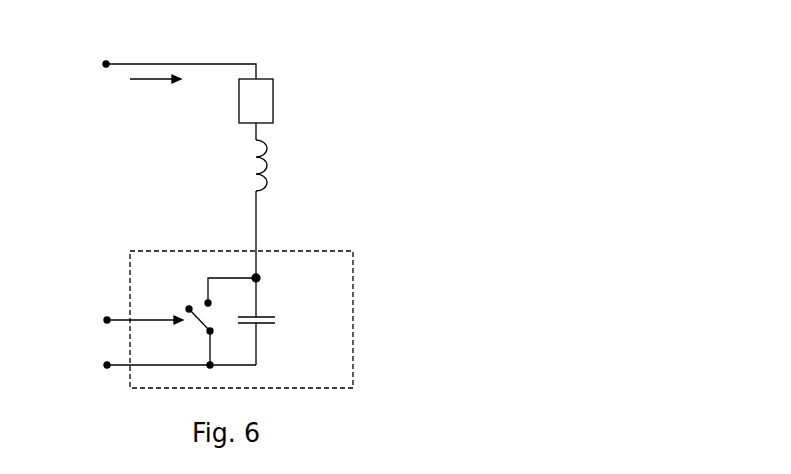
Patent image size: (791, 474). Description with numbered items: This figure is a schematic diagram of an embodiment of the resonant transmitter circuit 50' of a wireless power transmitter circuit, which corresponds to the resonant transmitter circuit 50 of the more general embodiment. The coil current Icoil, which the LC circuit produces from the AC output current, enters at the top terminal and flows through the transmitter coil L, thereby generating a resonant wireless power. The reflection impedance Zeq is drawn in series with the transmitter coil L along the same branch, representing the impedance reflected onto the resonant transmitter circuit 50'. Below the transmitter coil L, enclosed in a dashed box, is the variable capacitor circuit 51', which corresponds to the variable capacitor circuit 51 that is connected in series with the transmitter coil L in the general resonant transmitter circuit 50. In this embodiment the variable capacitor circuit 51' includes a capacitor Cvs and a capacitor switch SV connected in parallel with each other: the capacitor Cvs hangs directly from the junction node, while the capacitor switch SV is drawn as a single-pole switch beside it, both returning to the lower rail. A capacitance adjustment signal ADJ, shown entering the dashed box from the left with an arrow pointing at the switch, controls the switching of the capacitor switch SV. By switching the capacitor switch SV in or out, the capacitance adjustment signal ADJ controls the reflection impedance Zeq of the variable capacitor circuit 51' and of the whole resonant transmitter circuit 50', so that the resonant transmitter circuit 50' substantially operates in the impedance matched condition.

The resonant transmitter circuit 50' is at (232, 201).
The resonant transmitter circuit 50 is at (232, 201).
The variable capacitor circuit 51' is at (220, 303).
The variable capacitor circuit 51 is at (220, 303).
The coil current Icoil is at (155, 94).
The reflection impedance Zeq is at (278, 101).
The transmitter coil L is at (278, 165).
The capacitor switch SV is at (209, 318).
The capacitor Cvs is at (279, 321).
The capacitance adjustment signal ADJ is at (119, 320).